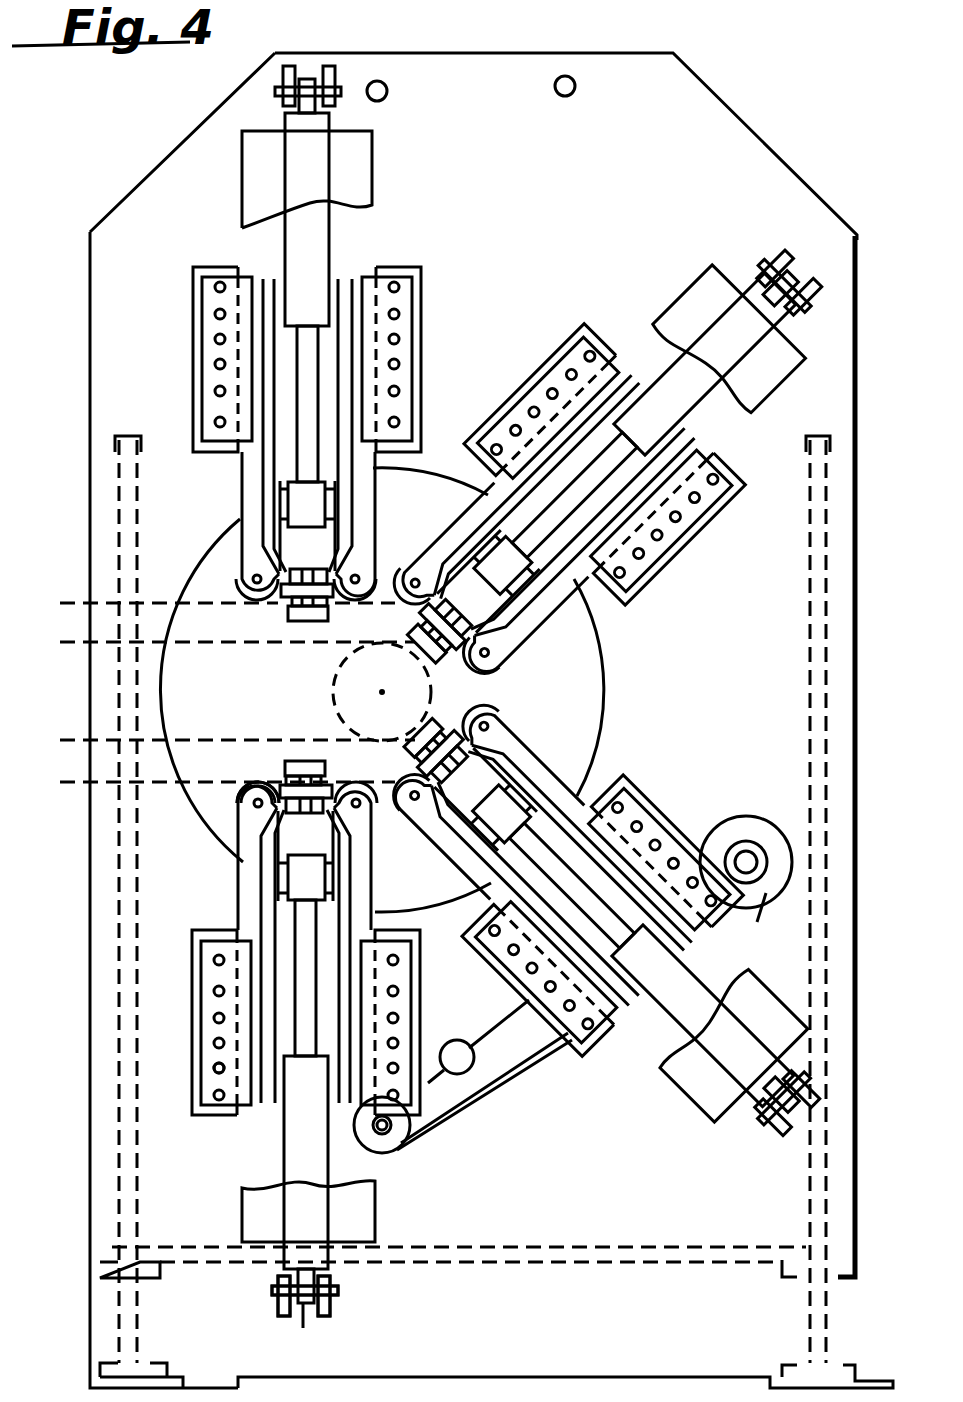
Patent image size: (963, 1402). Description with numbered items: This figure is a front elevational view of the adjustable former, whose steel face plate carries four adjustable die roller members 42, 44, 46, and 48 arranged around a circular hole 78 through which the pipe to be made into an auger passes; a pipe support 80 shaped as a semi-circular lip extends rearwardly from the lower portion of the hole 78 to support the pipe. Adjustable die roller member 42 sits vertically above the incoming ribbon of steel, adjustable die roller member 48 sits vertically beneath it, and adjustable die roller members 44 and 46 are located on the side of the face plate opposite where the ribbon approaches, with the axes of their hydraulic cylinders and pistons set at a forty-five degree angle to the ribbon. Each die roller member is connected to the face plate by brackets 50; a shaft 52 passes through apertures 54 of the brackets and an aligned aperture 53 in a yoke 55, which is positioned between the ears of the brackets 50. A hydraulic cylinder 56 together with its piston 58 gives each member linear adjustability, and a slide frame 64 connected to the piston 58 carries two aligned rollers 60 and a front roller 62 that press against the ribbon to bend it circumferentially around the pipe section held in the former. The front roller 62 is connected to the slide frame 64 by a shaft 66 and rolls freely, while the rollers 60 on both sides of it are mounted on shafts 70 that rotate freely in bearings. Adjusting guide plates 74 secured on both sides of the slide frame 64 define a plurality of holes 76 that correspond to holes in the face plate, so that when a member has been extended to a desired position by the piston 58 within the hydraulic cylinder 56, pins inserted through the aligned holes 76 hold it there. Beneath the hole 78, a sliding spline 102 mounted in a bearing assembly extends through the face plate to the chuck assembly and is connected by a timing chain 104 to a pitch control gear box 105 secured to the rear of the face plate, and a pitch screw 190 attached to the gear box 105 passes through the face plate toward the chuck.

The adjustable die roller member 42 is at (386, 180).
The adjustable die roller member 44 is at (604, 318).
The adjustable die roller member 46 is at (688, 797).
The adjustable die roller member 48 is at (388, 1223).
The bracket 50 is at (345, 1325).
The shaft 52 is at (346, 1291).
The aperture 53 is at (297, 1335).
The aperture 54 is at (281, 1306).
The yoke 55 is at (342, 1266).
The hydraulic cylinder 56 is at (292, 1165).
The piston 58 is at (312, 935).
The roller 60 is at (237, 806).
The front roller 62 is at (297, 762).
The slide frame 64 is at (246, 889).
The shaft 66 is at (327, 781).
The shaft 70 is at (253, 817).
The adjusting guide plate 74 is at (214, 1065).
The hole 76 is at (218, 966).
The circular hole 78 is at (582, 697).
The pipe support 80 is at (445, 908).
The sliding spline 102 is at (384, 1128).
The timing chain 104 is at (502, 1085).
The pitch control gear box 105 is at (763, 928).
The pitch screw 190 is at (748, 856).